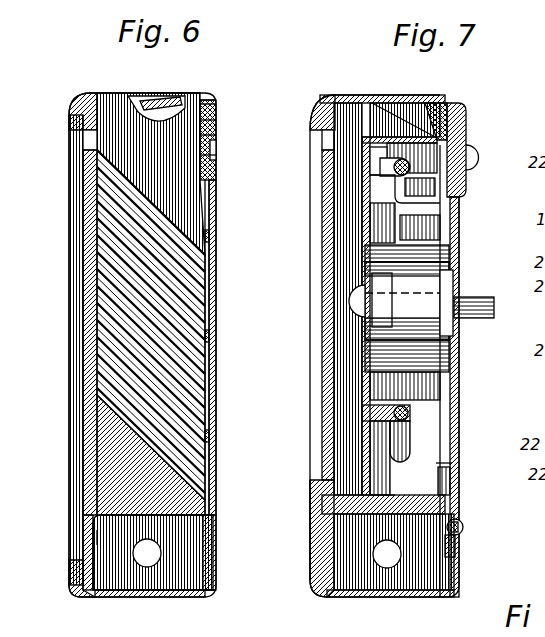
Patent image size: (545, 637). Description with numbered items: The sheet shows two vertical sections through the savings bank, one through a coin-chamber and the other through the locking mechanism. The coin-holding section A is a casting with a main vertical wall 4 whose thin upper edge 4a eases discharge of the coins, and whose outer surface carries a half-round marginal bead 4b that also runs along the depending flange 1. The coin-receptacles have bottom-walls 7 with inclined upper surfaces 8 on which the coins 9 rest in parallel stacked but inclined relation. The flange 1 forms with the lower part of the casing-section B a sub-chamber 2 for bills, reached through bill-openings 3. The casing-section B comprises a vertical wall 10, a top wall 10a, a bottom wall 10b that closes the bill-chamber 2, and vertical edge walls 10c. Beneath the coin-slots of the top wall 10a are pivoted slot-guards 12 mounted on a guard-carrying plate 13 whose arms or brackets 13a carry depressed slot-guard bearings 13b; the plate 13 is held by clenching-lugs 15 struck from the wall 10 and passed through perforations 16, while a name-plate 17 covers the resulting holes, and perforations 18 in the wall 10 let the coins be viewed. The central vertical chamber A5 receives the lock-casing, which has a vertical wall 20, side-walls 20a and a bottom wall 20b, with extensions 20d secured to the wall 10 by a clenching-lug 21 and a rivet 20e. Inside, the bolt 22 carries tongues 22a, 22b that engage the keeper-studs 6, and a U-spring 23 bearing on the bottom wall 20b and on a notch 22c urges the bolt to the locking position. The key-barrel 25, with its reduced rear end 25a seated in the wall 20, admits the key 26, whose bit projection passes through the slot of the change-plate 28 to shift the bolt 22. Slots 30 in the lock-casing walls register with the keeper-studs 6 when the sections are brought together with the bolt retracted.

In FIG. 6, the depending flange 1 is at (97, 534).
In FIG. 7, the depending flange 1 is at (292, 533).
In FIG. 6, the sub-chamber 2 is at (197, 562).
In FIG. 7, the sub-chamber 2 is at (432, 569).
In FIG. 6, the bill-openings 3 is at (133, 555).
In FIG. 7, the bill-openings 3 is at (387, 566).
In FIG. 6, the main vertical wall 4 is at (63, 212).
In FIG. 6, the upper edge of the vertical wall 4a is at (89, 93).
In FIG. 6, the half-round marginal bead 4b is at (69, 118).
In FIG. 7, the keeper-studs 6 is at (410, 168).
In FIG. 6, the bottom-walls 7 is at (182, 514).
In FIG. 7, the bottom-walls 7 is at (362, 512).
In FIG. 6, the inclined upper surfaces 8 is at (127, 427).
In FIG. 6, the coins 9 is at (192, 243).
In FIG. 7, the coins 9 is at (349, 307).
In FIG. 6, the vertical wall 10 is at (142, 79).
In FIG. 7, the vertical wall 10 is at (455, 215).
In FIG. 7, the top wall 10a is at (357, 82).
In FIG. 6, the bottom wall 10b is at (97, 597).
In FIG. 7, the bottom wall 10b is at (405, 597).
In FIG. 6, the vertical edge walls 10c is at (182, 97).
In FIG. 6, the slot-guards 12 is at (150, 101).
In FIG. 6, the guard-carrying plate 13 is at (218, 120).
In FIG. 6, the arms or brackets 13a is at (197, 103).
In FIG. 6, the slot-guard bearings 13b is at (215, 103).
In FIG. 6, the clenching-lugs 15 is at (218, 160).
In FIG. 6, the slots or perforations 16 is at (218, 140).
In FIG. 6, the name-plate 17 is at (218, 176).
In FIG. 7, the name-plate 17 is at (464, 122).
In FIG. 6, the perforations 18 is at (212, 392).
In FIG. 7, the vertical wall of the lock-casing 20 is at (364, 343).
In FIG. 7, the vertical side-walls 20a is at (439, 100).
In FIG. 7, the bottom wall of the lock-casing 20b is at (397, 495).
In FIG. 7, the extensions 20d is at (459, 540).
In FIG. 7, the rivet 20e is at (459, 530).
In FIG. 7, the clenching-lug 21 is at (412, 100).
In FIG. 7, the bolt 22 is at (379, 210).
In FIG. 7, the tongue or projection 22a is at (365, 192).
In FIG. 7, the tongue or projection 22b is at (379, 442).
In FIG. 7, the notch 22c is at (454, 477).
In FIG. 7, the U-spring 23 is at (445, 459).
In FIG. 7, the key-barrel 25 is at (431, 315).
In FIG. 7, the reduced rear end 25a is at (367, 297).
In FIG. 7, the key 26 is at (474, 315).
In FIG. 7, the change-plate 28 is at (369, 248).
In FIG. 7, the slots 30 is at (365, 160).
In FIG. 6, the coin-holding section A is at (32, 162).
In FIG. 7, the coin-holding section A is at (322, 178).
In FIG. 7, the central vertical chamber A5 is at (339, 378).
In FIG. 6, the casing-section B is at (210, 97).
In FIG. 7, the casing-section B is at (452, 97).